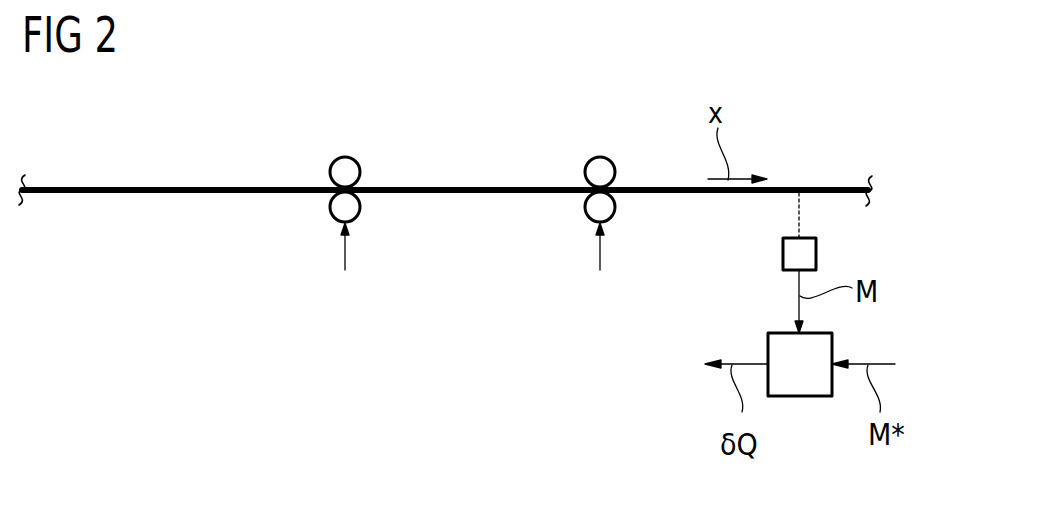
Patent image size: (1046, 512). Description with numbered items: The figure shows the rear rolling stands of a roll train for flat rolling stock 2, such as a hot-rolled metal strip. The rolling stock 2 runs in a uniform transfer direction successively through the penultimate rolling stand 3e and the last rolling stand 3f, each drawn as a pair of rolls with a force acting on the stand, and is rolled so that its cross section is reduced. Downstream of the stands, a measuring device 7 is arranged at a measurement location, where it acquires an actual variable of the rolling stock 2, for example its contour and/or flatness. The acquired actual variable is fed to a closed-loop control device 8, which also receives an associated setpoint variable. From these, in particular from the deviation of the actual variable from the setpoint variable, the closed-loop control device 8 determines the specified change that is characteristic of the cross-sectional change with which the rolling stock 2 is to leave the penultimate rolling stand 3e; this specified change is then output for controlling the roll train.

The rolling stock 2 is at (847, 187).
The penultimate rolling stand 3e is at (345, 157).
The last rolling stand 3f is at (600, 157).
The measuring device 7 is at (817, 253).
The closed-loop control device 8 is at (798, 397).